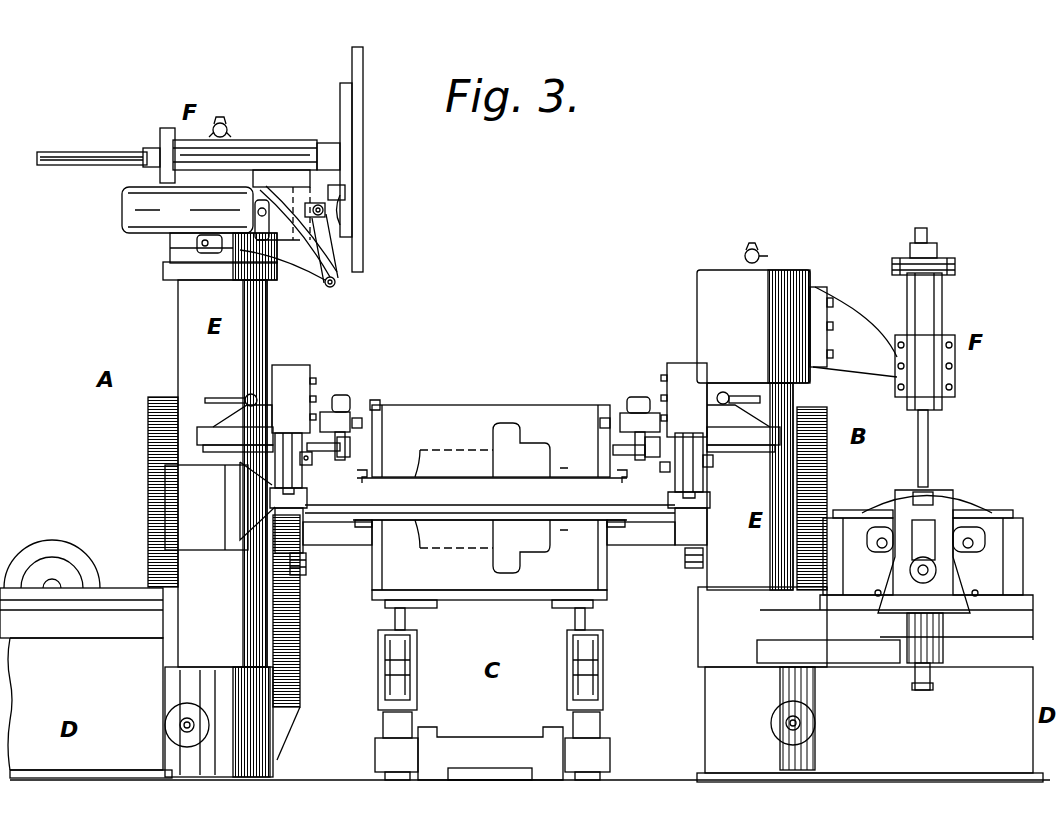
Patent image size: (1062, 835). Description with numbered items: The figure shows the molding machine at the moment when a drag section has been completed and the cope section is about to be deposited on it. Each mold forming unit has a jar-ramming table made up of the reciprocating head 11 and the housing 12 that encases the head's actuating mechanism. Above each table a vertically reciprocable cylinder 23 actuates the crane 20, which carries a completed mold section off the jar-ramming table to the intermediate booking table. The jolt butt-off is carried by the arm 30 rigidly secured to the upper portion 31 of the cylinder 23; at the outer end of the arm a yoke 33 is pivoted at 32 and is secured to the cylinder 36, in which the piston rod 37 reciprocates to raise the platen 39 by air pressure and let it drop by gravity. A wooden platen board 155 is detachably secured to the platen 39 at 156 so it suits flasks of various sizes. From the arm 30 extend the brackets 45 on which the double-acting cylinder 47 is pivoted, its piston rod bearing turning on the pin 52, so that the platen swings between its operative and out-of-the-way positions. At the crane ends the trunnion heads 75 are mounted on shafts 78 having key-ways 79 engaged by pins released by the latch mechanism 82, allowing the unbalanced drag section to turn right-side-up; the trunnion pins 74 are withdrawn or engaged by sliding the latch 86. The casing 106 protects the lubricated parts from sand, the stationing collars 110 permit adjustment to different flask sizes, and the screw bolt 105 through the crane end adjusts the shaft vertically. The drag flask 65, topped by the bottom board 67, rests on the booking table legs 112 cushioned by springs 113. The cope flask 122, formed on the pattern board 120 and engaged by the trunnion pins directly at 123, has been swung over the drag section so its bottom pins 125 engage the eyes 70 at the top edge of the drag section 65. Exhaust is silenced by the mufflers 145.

The reciprocating head 11 is at (516, 614).
The housing 12 is at (520, 705).
The crane 20 is at (187, 502).
The cylinder 23 is at (178, 335).
The arm or bracket 30 is at (297, 270).
The upper portion 31 is at (173, 243).
The pivot 32 is at (337, 283).
The yoke 33 is at (338, 250).
The cylinder 36 is at (283, 124).
The piston rod 37 is at (92, 152).
The platen 39 is at (340, 192).
The brackets 45 is at (253, 253).
The cylinder 47 is at (137, 195).
The pin 52 is at (325, 207).
The flask 65 is at (490, 555).
The bottom board 67 is at (503, 597).
The eyes 70 is at (363, 527).
The pins 74 is at (977, 523).
The trunnion heads 75 is at (362, 452).
The shaft 78 is at (355, 450).
The key-way 79 is at (925, 584).
The latch mechanism 82 is at (218, 397).
The latch 86 is at (347, 397).
The screw bolt 105 is at (300, 573).
The casing 106 is at (285, 373).
The stationing collars 110 is at (303, 457).
The legs 112 is at (403, 622).
The springs 113 is at (405, 670).
The pattern board 120 is at (127, 577).
The cope flask 122 is at (443, 407).
The engagement point 123 is at (373, 412).
The bottom pins 125 is at (362, 483).
The mufflers 145 is at (170, 722).
The platen board 155 is at (362, 135).
The securing point 156 is at (340, 103).